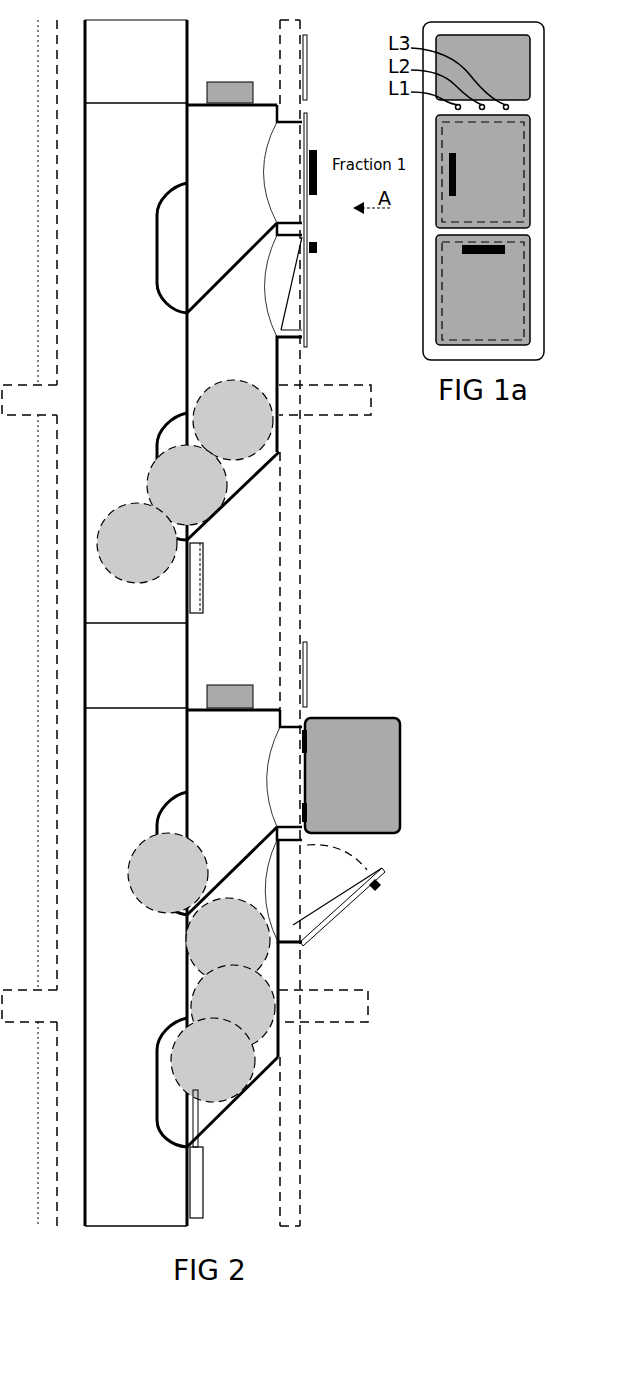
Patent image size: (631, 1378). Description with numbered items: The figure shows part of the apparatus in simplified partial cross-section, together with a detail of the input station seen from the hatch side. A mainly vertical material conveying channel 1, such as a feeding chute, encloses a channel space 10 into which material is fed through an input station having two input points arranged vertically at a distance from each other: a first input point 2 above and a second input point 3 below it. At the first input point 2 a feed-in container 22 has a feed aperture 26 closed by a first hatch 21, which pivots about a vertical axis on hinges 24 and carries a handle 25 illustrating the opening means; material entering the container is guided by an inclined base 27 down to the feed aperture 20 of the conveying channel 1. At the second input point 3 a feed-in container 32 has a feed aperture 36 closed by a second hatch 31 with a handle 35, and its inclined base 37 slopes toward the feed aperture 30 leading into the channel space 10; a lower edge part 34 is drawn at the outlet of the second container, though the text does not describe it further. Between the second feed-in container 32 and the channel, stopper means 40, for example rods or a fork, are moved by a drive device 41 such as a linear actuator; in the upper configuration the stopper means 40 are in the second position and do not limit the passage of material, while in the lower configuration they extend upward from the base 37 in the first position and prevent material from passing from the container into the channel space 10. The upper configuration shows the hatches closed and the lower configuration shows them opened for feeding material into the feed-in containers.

In FIG. 2, the material conveying channel 1 is at (75, 204).
In FIG. 2, the channel space 10 is at (85, 245).
In FIG. 2, the first input point 2 is at (322, 140).
In FIG. 2, the second input point 3 is at (322, 262).
In FIG. 2, the feed aperture 20 is at (182, 242).
In FIG. 2, the first hatch 21 is at (310, 205).
In FIG. 1A, the first hatch 21 is at (511, 203).
In FIG. 2, the feed-in container 22 is at (245, 118).
In FIG. 2, the hinges 24 is at (310, 728).
In FIG. 2, the handle 25 is at (322, 166).
In FIG. 1A, the handle 25 is at (458, 170).
In FIG. 2, the feed aperture of the feed-in container 26 is at (403, 428).
In FIG. 2, the base 27 is at (266, 852).
In FIG. 2, the feed aperture 30 is at (186, 432).
In FIG. 2, the second hatch 31 is at (372, 932).
In FIG. 1A, the second hatch 31 is at (508, 286).
In FIG. 2, the feed-in container 32 is at (282, 452).
In FIG. 2, the outlet edge 34 is at (302, 347).
In FIG. 2, the handle 35 is at (322, 248).
In FIG. 1A, the handle 35 is at (508, 240).
In FIG. 2, the feed aperture of the feed-in container 36 is at (302, 870).
In FIG. 2, the base 37 is at (252, 490).
In FIG. 2, the stopper means 40 is at (205, 548).
In FIG. 2, the drive device 41 is at (200, 580).